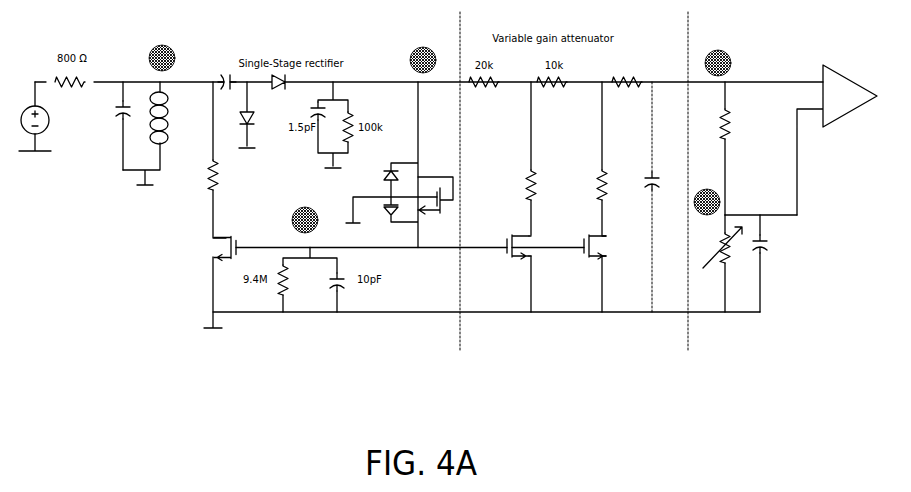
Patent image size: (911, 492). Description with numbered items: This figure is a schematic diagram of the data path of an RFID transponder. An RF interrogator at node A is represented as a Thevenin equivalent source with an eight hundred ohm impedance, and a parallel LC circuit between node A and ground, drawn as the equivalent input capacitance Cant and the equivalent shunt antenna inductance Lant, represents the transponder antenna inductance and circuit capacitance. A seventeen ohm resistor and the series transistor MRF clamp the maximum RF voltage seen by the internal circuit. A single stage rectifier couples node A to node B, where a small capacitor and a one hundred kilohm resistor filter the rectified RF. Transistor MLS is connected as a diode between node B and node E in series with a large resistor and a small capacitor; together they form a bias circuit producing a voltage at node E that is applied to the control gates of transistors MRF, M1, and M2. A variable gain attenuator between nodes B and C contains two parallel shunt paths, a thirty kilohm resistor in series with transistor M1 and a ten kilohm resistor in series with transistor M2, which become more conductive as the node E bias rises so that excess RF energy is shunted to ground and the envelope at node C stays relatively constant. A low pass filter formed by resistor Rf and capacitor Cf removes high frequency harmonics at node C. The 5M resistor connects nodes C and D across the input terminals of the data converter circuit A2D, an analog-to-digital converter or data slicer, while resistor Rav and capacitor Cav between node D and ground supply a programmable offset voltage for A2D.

The equivalent input capacitance of antenna + chip Cant is at (116, 122).
The equivalent shunt inductance of antenna Lant is at (145, 187).
The series transistor MRF is at (147, 352).
The transistor MLS is at (399, 165).
The resistor Rf is at (629, 68).
The capacitor Cf is at (645, 197).
The transistor M1 is at (512, 197).
The transistor M2 is at (588, 197).
The data converter circuit A2D is at (837, 140).
The 5 megohm resistor 5M is at (736, 148).
The resistor Rav is at (818, 356).
The capacitor Cav is at (776, 263).